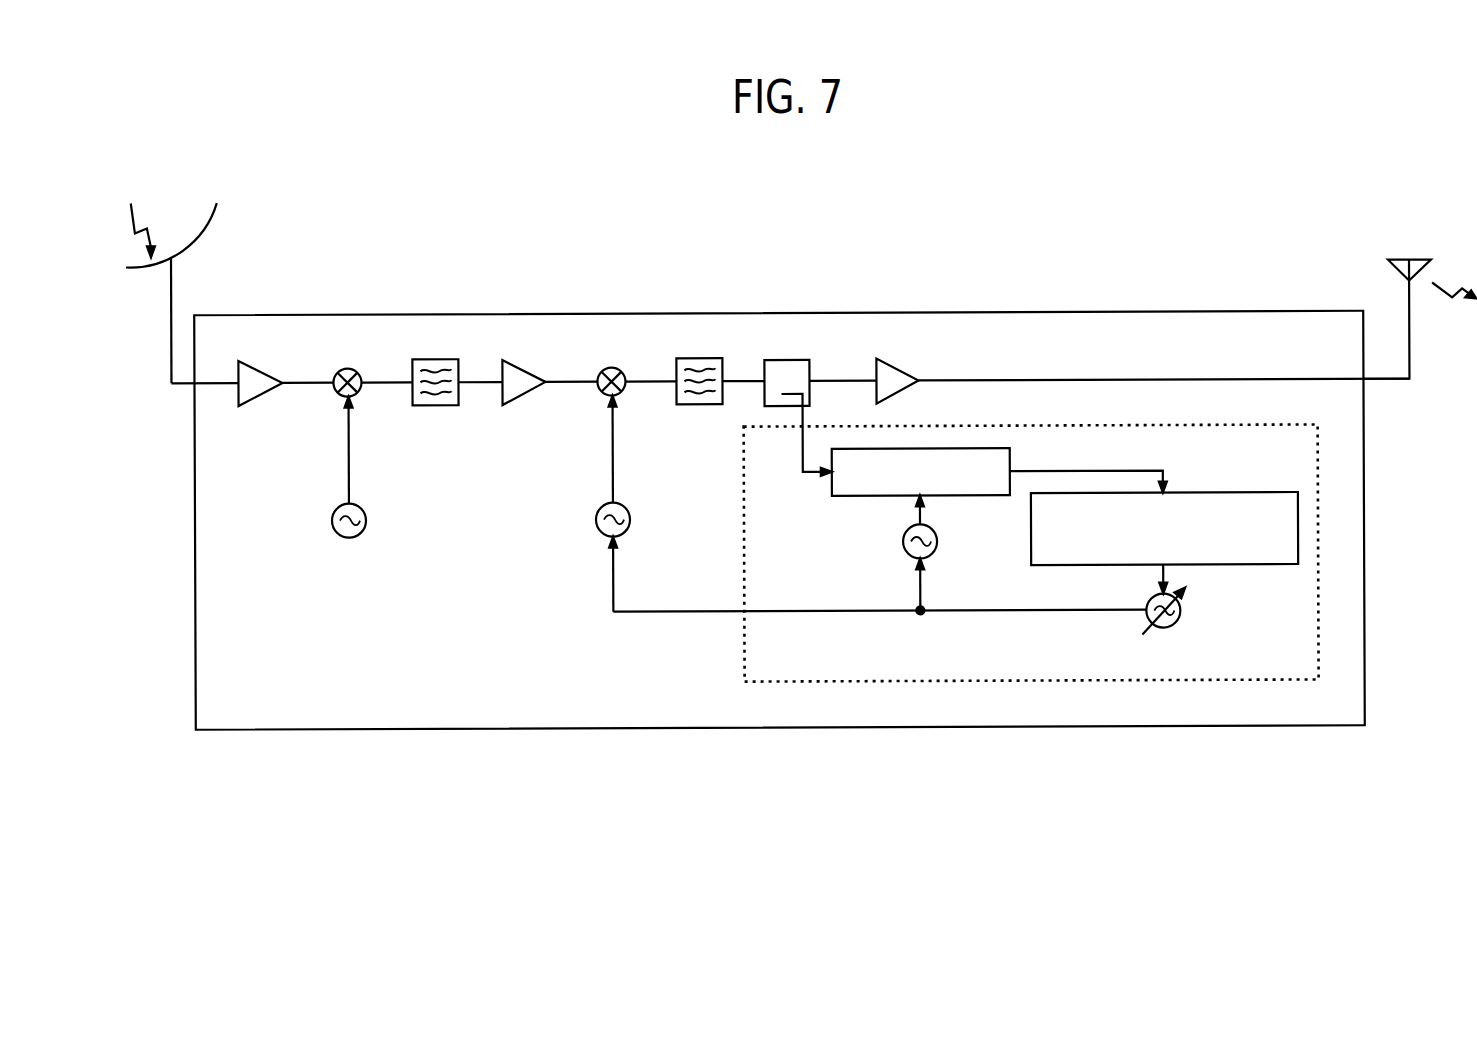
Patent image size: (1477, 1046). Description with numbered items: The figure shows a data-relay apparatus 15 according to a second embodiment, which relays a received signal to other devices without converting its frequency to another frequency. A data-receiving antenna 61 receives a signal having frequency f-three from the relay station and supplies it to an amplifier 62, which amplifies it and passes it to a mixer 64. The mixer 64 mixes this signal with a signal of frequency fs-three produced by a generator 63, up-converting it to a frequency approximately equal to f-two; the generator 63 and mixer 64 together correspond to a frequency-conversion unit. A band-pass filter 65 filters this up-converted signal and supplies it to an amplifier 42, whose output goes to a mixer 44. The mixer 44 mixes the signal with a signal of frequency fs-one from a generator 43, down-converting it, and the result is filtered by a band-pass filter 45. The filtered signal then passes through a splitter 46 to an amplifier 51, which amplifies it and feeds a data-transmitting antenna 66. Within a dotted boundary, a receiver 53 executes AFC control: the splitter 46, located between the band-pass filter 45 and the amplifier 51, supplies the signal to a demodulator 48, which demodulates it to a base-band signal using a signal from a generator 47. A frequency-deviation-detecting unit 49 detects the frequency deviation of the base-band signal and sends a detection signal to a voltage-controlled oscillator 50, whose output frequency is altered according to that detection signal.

The data-relay apparatus 15 is at (437, 728).
The data-receiving antenna 61 is at (208, 231).
The amplifier 62 is at (268, 371).
The mixer 64 is at (349, 366).
The generator 63 is at (369, 520).
The band-pass filter 65 is at (440, 358).
The amplifier 42 is at (533, 370).
The mixer 44 is at (613, 366).
The generator 43 is at (633, 520).
The band-pass filter 45 is at (704, 358).
The splitter 46 is at (812, 406).
The amplifier 51 is at (905, 371).
The receiver 53 is at (744, 660).
The demodulator 48 is at (1012, 453).
The frequency-deviation-detecting unit 49 is at (1229, 492).
The voltage-controlled oscillator 50 is at (1182, 613).
The generator 47 is at (899, 544).
The data-transmitting antenna 66 is at (1389, 266).